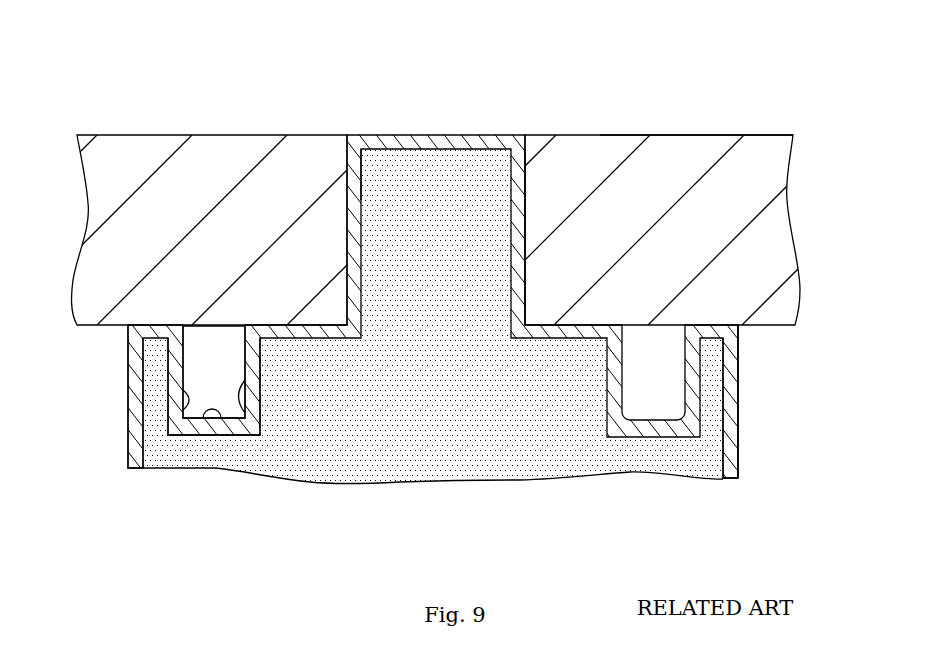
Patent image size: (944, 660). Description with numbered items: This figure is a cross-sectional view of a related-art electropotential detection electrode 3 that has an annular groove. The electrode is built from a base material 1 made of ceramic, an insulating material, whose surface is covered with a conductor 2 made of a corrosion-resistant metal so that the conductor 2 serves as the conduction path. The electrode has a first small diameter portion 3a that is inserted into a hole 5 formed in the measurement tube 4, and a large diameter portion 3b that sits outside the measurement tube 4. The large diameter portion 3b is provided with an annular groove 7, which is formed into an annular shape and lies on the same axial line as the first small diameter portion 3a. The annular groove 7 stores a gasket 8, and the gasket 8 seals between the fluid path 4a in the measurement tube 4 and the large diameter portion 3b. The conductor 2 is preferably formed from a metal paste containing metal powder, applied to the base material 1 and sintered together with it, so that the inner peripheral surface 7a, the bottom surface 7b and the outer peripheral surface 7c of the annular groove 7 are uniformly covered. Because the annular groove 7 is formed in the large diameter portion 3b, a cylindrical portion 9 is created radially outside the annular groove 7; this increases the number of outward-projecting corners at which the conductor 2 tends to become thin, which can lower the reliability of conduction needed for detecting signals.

The base material 1 is at (445, 417).
The conductor 2 is at (469, 136).
The electropotential detection electrode 3 is at (770, 471).
The first small diameter portion 3a is at (526, 197).
The large diameter portion 3b is at (742, 392).
The measurement tube 4 is at (773, 224).
The fluid path 4a is at (720, 136).
The hole 5 is at (362, 200).
The annular groove 7 is at (184, 366).
The inner peripheral surface 7a is at (236, 422).
The bottom surface 7b is at (200, 422).
The outer peripheral surface 7c is at (197, 420).
The gasket 8 is at (192, 328).
The cylindrical portion 9 is at (118, 348).